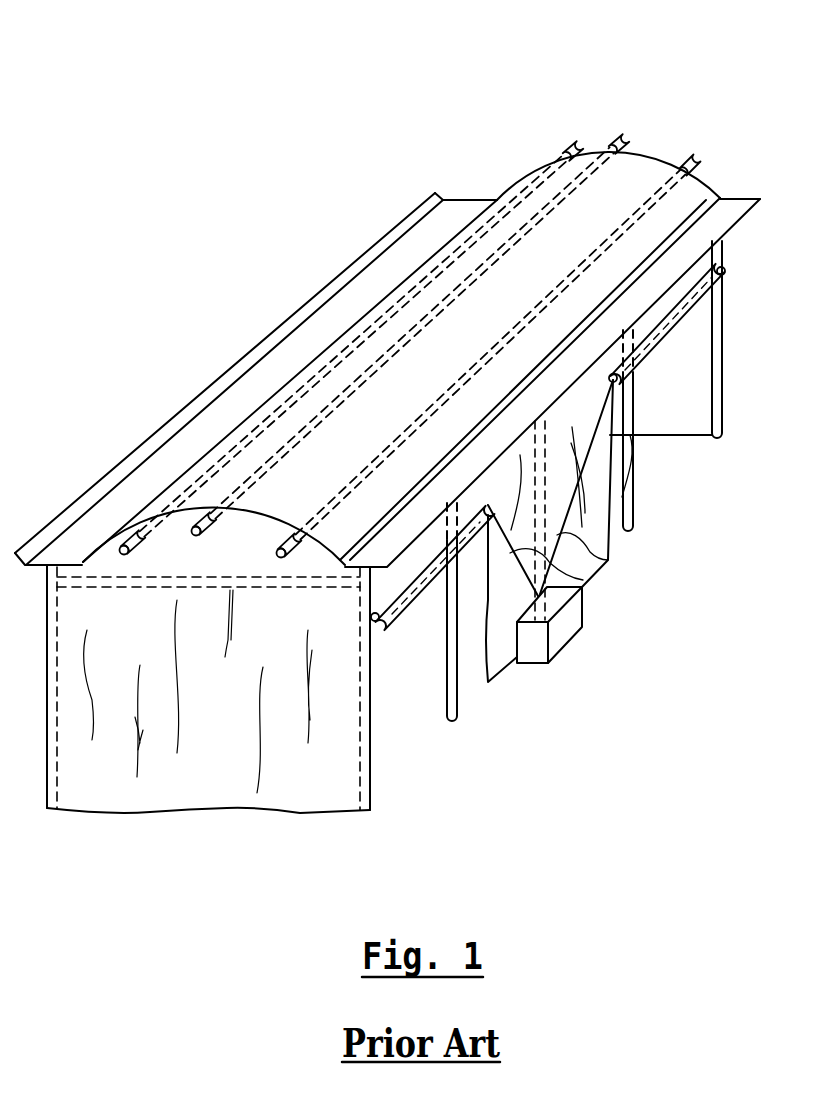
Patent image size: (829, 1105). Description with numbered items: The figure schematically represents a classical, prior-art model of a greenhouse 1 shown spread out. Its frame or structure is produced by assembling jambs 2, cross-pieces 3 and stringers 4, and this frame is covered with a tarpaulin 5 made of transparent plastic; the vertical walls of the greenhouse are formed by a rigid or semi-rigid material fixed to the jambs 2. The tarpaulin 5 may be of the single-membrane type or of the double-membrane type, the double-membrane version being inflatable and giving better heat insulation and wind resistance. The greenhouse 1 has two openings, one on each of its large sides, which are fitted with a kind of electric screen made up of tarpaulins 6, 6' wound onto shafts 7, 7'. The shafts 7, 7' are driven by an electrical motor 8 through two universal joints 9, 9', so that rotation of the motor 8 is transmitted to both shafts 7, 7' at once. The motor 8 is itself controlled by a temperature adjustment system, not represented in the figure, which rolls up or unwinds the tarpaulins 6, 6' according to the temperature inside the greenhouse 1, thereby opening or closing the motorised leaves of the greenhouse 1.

The greenhouse 1 is at (664, 98).
The jambs 2 is at (632, 458).
The cross-pieces 3 is at (100, 580).
The stringers 4 is at (694, 162).
The tarpaulin 5 is at (560, 228).
The tarpaulin 6 is at (435, 603).
The tarpaulin 6' is at (687, 324).
The shaft 7 is at (342, 607).
The shaft 7' is at (751, 252).
The electrical motor 8 is at (560, 628).
The universal joint 9 is at (578, 497).
The universal joint 9' is at (565, 531).